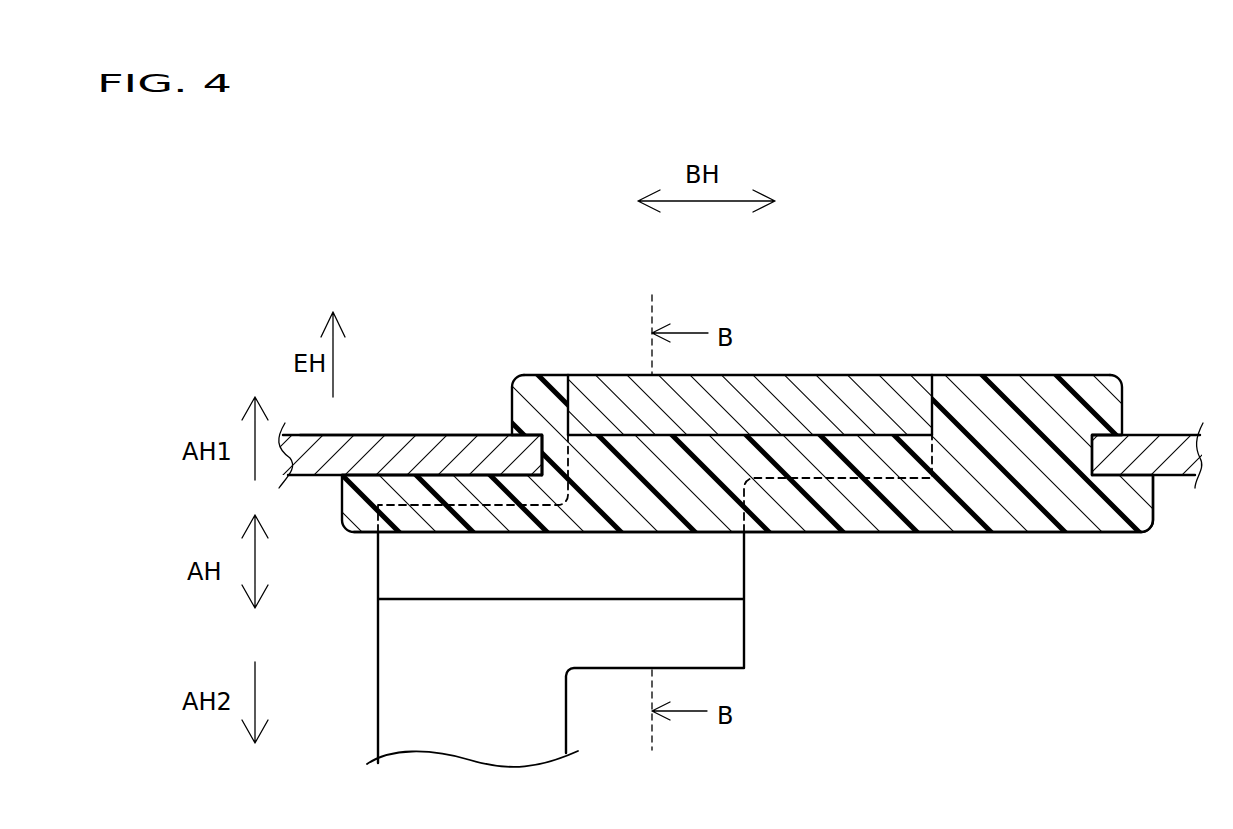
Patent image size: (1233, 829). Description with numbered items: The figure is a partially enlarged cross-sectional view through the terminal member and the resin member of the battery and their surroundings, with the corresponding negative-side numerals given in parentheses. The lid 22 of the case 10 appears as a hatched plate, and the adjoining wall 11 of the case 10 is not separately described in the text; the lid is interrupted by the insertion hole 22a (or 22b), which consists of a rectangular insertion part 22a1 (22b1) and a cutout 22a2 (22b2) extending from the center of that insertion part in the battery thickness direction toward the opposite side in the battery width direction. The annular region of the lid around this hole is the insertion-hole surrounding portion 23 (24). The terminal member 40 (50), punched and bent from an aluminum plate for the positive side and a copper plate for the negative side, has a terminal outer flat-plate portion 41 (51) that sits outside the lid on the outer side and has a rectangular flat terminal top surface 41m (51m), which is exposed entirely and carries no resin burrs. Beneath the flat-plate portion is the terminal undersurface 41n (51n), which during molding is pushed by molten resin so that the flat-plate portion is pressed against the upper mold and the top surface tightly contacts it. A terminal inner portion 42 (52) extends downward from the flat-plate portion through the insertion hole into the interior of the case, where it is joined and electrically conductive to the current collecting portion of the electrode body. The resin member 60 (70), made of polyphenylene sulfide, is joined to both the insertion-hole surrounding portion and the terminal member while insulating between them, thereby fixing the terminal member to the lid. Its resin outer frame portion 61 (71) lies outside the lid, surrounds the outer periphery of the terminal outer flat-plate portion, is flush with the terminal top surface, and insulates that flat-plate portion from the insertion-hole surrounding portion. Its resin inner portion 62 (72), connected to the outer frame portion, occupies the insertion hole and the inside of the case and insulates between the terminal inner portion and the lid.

The first plate 11 is at (411, 381).
The case 10 is at (387, 434).
The lid 22 is at (437, 434).
The insertion-hole surrounding portion 23 is at (847, 381).
The insertion-hole surrounding portion 24 is at (1153, 358).
The insertion hole 22a is at (493, 375).
The insertion hole 22b is at (545, 461).
The insertion part 22a1 is at (550, 352).
The insertion part 22b1 is at (530, 455).
The cutout 22a2 is at (1072, 537).
The cutout 22b2 is at (1088, 456).
The positive terminal member 40 is at (716, 417).
The negative terminal member 50 is at (906, 385).
The terminal outer flat-plate portion 41 is at (752, 347).
The terminal outer flat-plate portion 51 is at (760, 395).
The terminal top surface 41m is at (817, 301).
The terminal top surface 51m is at (833, 375).
The terminal undersurface 41n is at (750, 544).
The terminal undersurface 51n is at (793, 437).
The terminal inner portion 42 is at (649, 601).
The terminal inner portion 52 is at (629, 588).
The resin member 60 is at (747, 570).
The resin member 70 is at (883, 517).
The resin outer frame portion 61 is at (716, 394).
The resin outer frame portion 71 is at (1013, 402).
The resin inner portion 62 is at (1044, 549).
The resin inner portion 72 is at (953, 512).